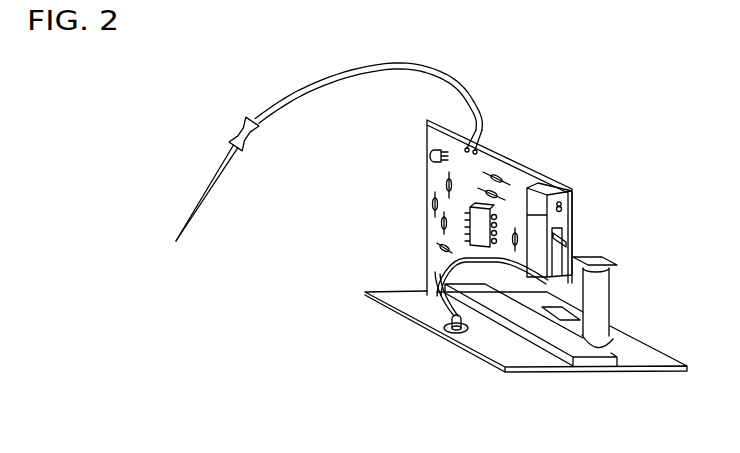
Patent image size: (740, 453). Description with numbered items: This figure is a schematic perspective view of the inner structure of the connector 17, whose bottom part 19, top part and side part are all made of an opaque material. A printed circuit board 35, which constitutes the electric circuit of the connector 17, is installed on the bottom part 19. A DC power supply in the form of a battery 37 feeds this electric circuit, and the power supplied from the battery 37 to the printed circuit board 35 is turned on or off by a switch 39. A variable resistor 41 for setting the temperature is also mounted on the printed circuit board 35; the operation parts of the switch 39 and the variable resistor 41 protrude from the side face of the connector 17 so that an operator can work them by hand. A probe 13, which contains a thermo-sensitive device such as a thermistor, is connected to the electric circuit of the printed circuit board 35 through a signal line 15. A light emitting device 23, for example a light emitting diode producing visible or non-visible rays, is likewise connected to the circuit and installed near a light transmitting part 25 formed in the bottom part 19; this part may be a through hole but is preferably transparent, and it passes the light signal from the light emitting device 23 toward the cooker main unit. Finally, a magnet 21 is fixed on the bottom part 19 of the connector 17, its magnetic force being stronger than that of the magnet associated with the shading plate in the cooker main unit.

The probe 13 is at (220, 171).
The signal line 15 is at (371, 80).
The connector 17 is at (400, 219).
The bottom part 19 is at (664, 374).
The magnet 21 is at (591, 363).
The light emitting device 23 is at (449, 335).
The light transmitting part 25 is at (466, 338).
The printed circuit board 35 is at (522, 179).
The battery 37 is at (602, 303).
The switch 39 is at (553, 190).
The variable resistor 41 is at (561, 236).